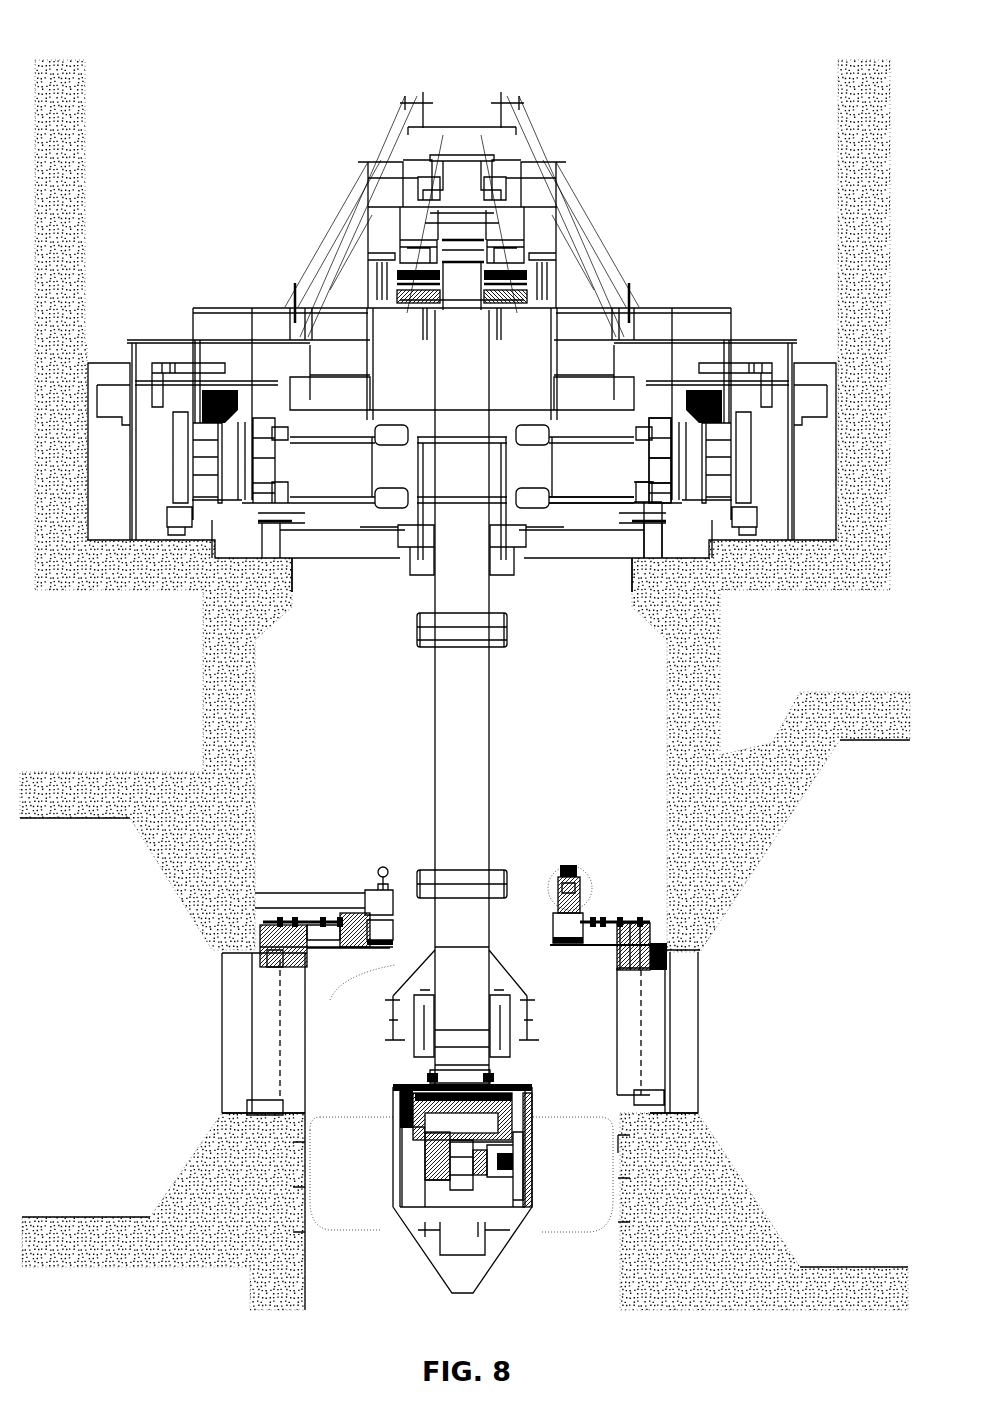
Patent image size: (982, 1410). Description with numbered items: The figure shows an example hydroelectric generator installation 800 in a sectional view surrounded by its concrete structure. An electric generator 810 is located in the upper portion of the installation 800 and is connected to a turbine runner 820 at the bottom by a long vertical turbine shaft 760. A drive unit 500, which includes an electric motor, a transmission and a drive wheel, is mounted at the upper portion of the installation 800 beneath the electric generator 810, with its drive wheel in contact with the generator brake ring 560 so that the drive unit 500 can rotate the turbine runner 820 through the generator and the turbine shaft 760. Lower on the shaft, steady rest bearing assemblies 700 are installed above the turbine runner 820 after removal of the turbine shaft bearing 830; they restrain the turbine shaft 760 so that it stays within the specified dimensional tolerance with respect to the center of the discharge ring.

The hydroelectric generator installation 800 is at (112, 58).
The electric generator 810 is at (366, 583).
The generator brake ring 560 is at (624, 508).
The drive unit 500 is at (668, 518).
The turbine shaft 760 is at (500, 768).
The steady rest bearing assemblies 700 is at (402, 1051).
The turbine shaft bearing 830 is at (527, 1044).
The turbine runner 820 is at (396, 1252).